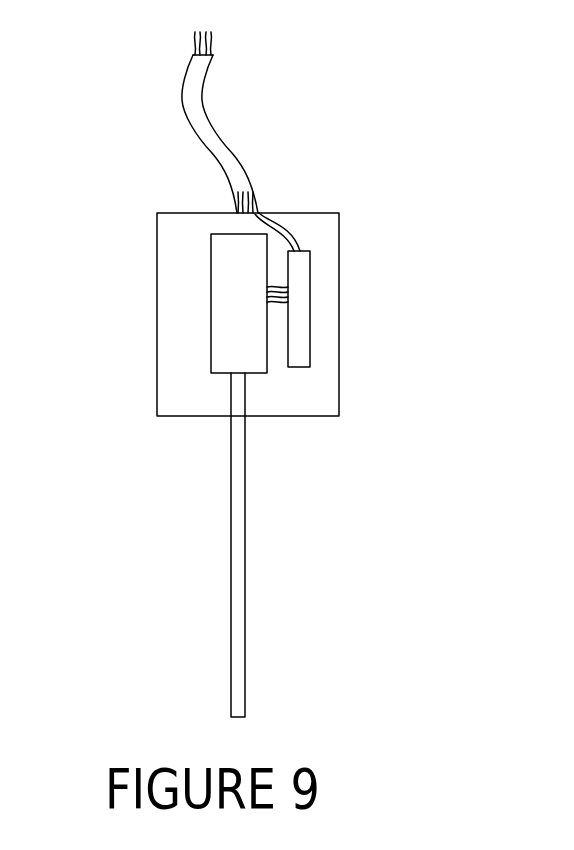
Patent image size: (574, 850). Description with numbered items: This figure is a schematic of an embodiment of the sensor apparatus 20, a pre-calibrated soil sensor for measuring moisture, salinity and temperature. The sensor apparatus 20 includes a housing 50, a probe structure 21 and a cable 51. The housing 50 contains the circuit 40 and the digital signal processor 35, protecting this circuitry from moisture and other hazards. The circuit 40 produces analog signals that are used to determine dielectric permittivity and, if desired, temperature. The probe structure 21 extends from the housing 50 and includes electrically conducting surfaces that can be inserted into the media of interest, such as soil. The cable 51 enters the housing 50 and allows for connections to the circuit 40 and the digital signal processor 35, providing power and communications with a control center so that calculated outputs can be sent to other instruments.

The sensor apparatus 20 is at (350, 158).
The probe structure 21 is at (257, 585).
The digital signal processor 35 is at (313, 289).
The circuit 40 is at (243, 287).
The housing 50 is at (342, 325).
The cable 51 is at (226, 137).